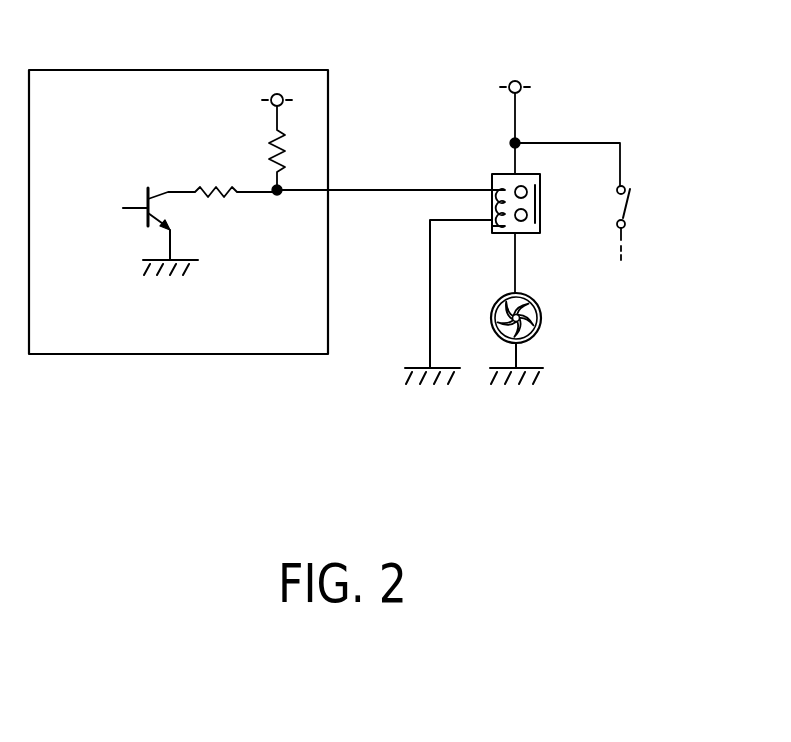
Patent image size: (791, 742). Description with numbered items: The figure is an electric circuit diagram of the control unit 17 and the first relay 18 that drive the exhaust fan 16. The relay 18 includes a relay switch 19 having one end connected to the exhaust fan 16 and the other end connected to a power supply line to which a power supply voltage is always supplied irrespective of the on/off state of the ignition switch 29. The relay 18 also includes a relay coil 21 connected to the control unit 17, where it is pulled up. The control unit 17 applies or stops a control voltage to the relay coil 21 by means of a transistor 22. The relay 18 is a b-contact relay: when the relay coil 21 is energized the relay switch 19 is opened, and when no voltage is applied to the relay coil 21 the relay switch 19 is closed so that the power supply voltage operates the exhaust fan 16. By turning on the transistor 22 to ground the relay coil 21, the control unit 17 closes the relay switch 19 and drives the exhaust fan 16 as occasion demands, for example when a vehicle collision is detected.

The exhaust fan 16 is at (542, 330).
The control unit 17 is at (132, 87).
The first relay 18 is at (548, 136).
The relay switch 19 is at (540, 203).
The relay coil 21 is at (497, 184).
The transistor 22 is at (141, 215).
The ignition switch 29 is at (627, 205).